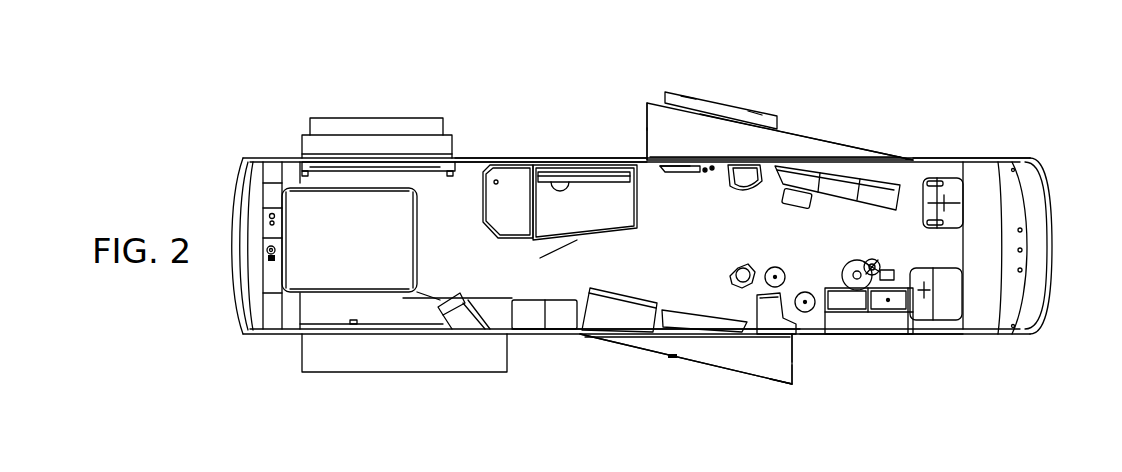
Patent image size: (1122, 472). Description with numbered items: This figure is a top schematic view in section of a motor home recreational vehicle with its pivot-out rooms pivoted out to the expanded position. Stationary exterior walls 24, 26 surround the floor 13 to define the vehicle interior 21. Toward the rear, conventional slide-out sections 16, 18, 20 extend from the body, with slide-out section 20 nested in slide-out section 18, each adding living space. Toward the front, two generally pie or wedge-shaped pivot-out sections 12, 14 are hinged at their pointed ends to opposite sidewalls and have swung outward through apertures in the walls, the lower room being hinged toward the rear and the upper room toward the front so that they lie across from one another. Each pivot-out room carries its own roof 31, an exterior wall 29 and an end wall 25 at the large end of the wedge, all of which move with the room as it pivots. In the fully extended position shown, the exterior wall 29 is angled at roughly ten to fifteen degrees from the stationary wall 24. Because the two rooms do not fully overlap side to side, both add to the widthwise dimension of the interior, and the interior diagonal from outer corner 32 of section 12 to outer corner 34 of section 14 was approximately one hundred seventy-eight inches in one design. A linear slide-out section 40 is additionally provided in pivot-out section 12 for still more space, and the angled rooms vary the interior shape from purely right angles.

The pivot-out section 12 is at (787, 148).
The floor 13 is at (672, 266).
The pivot-out section 14 is at (745, 360).
The slide-out section 16 is at (460, 370).
The slide-out section 18 is at (452, 152).
The slide-out section 20 is at (449, 122).
The vehicle interior 21 is at (455, 208).
The exterior wall 24 is at (928, 163).
The end wall 25 is at (645, 137).
The exterior wall 26 is at (866, 338).
The exterior wall 29 is at (833, 146).
The roof 31 is at (692, 152).
The outer corner 32 is at (648, 113).
The outer corner 34 is at (792, 376).
The linear slide-out section 40 is at (664, 96).